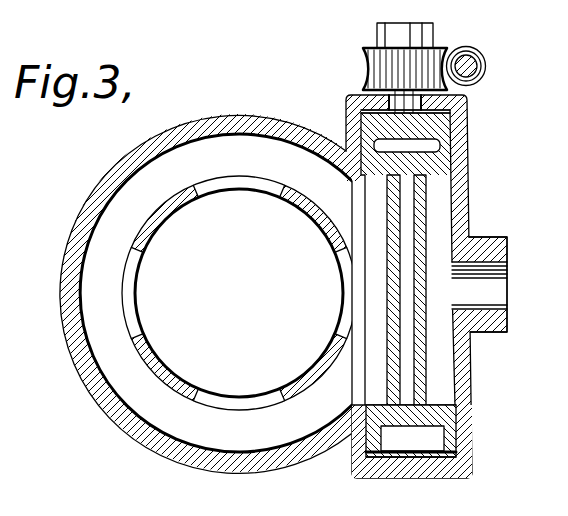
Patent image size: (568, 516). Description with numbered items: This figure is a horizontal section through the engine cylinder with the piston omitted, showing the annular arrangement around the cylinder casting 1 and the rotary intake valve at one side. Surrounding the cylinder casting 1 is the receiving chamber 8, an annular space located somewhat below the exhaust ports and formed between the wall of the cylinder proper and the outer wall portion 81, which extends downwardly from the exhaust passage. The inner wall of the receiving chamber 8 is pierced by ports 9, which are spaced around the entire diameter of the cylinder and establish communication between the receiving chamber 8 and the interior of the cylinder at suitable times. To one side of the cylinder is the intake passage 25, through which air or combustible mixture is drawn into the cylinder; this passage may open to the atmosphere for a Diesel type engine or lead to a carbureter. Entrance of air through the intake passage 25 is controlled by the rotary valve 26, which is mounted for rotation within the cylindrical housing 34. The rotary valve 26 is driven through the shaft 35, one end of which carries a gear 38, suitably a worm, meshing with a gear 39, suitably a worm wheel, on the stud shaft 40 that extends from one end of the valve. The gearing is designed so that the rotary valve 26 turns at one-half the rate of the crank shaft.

The cylinder casting 1 is at (160, 373).
The receiving chamber 8 is at (222, 441).
The outer wall portion 81 is at (148, 441).
The ports 9 is at (242, 183).
The intake passage 25 is at (507, 247).
The rotary valve 26 is at (432, 415).
The cylindrical housing 34 is at (362, 463).
The shaft 35 is at (484, 58).
The gear 38 is at (483, 78).
The gear 39 is at (363, 70).
The stud shaft 40 is at (422, 110).